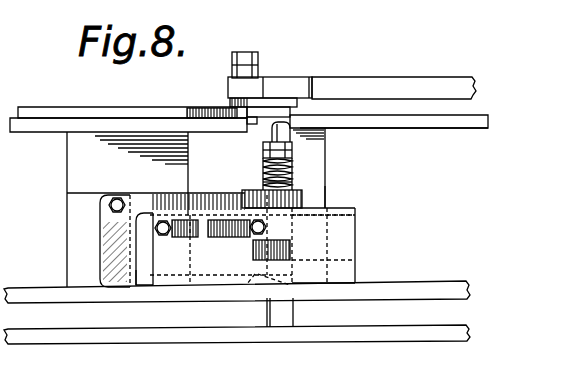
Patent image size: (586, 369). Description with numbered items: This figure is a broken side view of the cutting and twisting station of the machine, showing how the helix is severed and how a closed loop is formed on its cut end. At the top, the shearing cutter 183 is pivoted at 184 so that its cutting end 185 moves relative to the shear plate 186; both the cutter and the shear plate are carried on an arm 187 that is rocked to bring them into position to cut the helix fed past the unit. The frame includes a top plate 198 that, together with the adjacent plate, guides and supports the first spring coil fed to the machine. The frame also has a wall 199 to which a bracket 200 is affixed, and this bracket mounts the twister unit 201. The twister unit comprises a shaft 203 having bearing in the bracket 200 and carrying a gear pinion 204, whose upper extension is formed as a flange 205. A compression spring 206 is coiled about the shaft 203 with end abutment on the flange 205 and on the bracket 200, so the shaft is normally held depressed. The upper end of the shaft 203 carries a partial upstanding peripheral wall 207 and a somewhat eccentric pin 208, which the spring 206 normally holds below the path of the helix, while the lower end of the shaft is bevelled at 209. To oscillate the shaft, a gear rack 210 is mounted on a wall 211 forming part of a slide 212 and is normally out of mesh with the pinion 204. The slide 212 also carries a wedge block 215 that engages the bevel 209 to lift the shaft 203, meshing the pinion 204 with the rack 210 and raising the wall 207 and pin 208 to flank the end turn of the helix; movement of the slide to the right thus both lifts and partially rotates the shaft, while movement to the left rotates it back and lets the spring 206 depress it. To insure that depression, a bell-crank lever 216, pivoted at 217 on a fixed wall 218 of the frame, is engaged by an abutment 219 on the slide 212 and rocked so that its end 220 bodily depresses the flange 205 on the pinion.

The shearing cutter 183 is at (68, 103).
The pivot 184 is at (261, 70).
The cutting end 185 is at (270, 111).
The shear plate 186 is at (270, 106).
The arm 187 is at (423, 80).
The top plate 198 is at (456, 124).
The wall 199 is at (326, 193).
The bracket 200 is at (326, 141).
The twister unit 201 is at (258, 163).
The shaft 203 is at (266, 173).
The gear pinion 204 is at (257, 258).
The flange 205 is at (356, 214).
The compression spring 206 is at (292, 180).
The partial upstanding peripheral wall 207 is at (295, 125).
The eccentric pin 208 is at (271, 131).
The bevel 209 is at (330, 263).
The gear rack 210 is at (197, 236).
The wall 211 is at (345, 240).
The slide 212 is at (417, 285).
The wedge block 215 is at (262, 280).
The bell-crank lever 216 is at (178, 200).
The pivot 217 is at (121, 192).
The fixed wall 218 is at (68, 231).
The abutment 219 is at (145, 285).
The end 220 is at (302, 192).